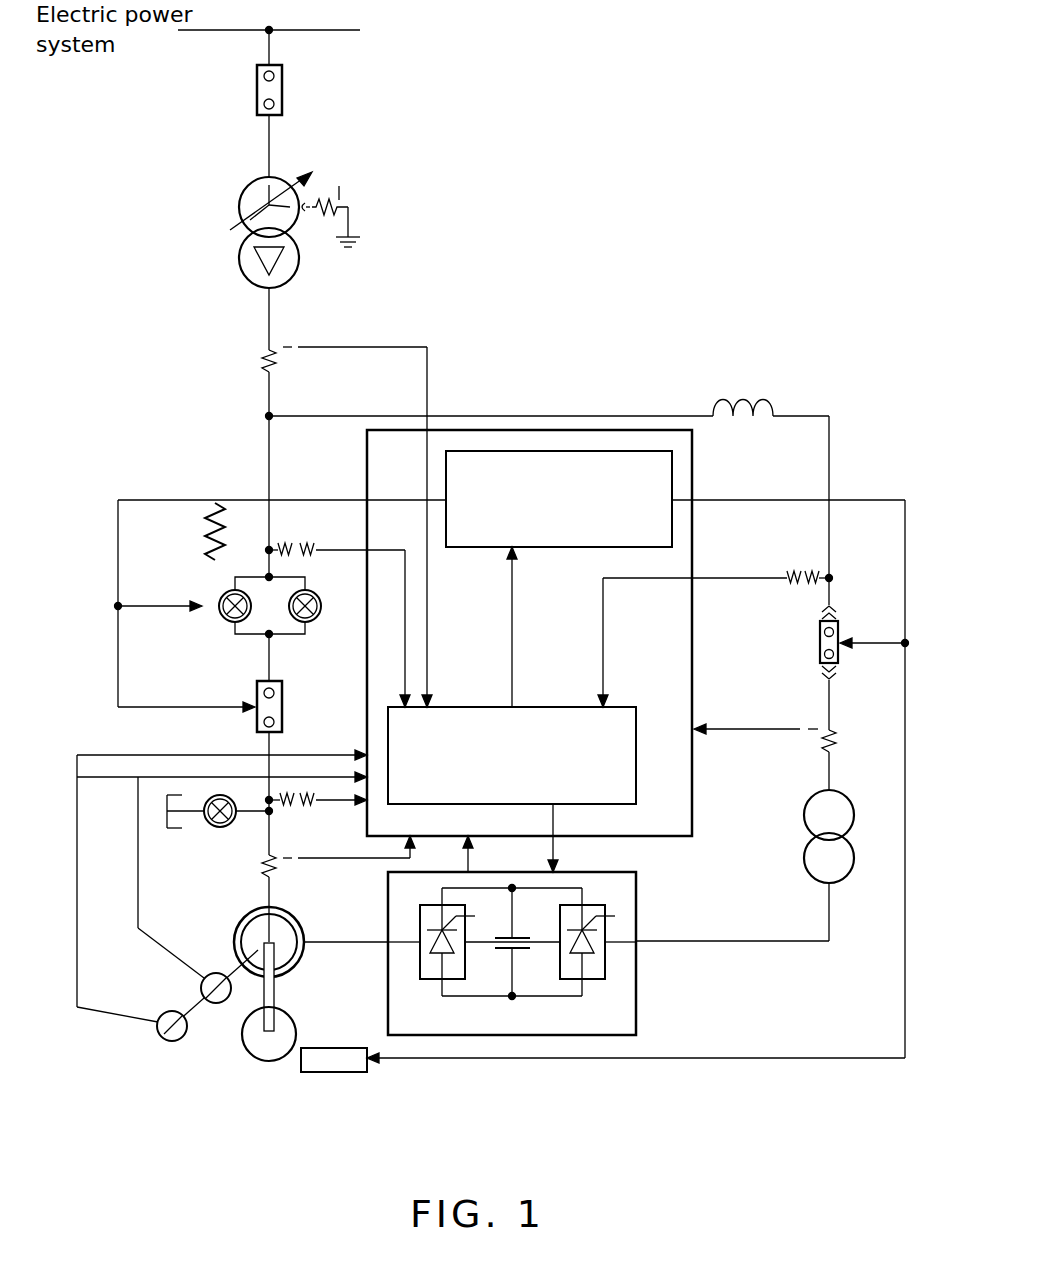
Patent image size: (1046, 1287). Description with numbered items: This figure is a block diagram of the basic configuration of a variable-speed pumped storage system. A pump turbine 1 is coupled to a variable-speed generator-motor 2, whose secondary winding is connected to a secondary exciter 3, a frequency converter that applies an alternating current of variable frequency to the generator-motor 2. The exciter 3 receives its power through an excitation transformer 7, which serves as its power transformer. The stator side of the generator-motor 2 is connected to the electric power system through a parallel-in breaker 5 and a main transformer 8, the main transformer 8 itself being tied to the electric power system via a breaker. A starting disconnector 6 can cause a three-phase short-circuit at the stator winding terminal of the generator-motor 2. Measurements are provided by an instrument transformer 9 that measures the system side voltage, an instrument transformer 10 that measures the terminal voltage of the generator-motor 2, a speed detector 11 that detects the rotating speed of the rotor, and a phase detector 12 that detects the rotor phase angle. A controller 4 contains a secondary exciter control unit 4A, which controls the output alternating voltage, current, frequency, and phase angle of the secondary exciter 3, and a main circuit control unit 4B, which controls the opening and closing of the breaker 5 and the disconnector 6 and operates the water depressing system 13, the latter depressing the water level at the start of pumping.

The pump turbine 1 is at (272, 1062).
The variable-speed generator-motor 2 is at (296, 968).
The secondary exciter 3 is at (639, 1003).
The controller 4 is at (549, 633).
The secondary exciter control unit 4A is at (549, 702).
The main circuit control unit 4B is at (565, 548).
The parallel-in breaker 5 is at (283, 705).
The starting disconnector 6 is at (222, 828).
The excitation transformer 7 is at (804, 852).
The main transformer 8 is at (231, 240).
The instrument transformer 9 is at (294, 532).
The instrument transformer 10 is at (297, 815).
The speed detector 11 is at (208, 973).
The phase detector 12 is at (170, 1042).
The water depressing system 13 is at (330, 1073).